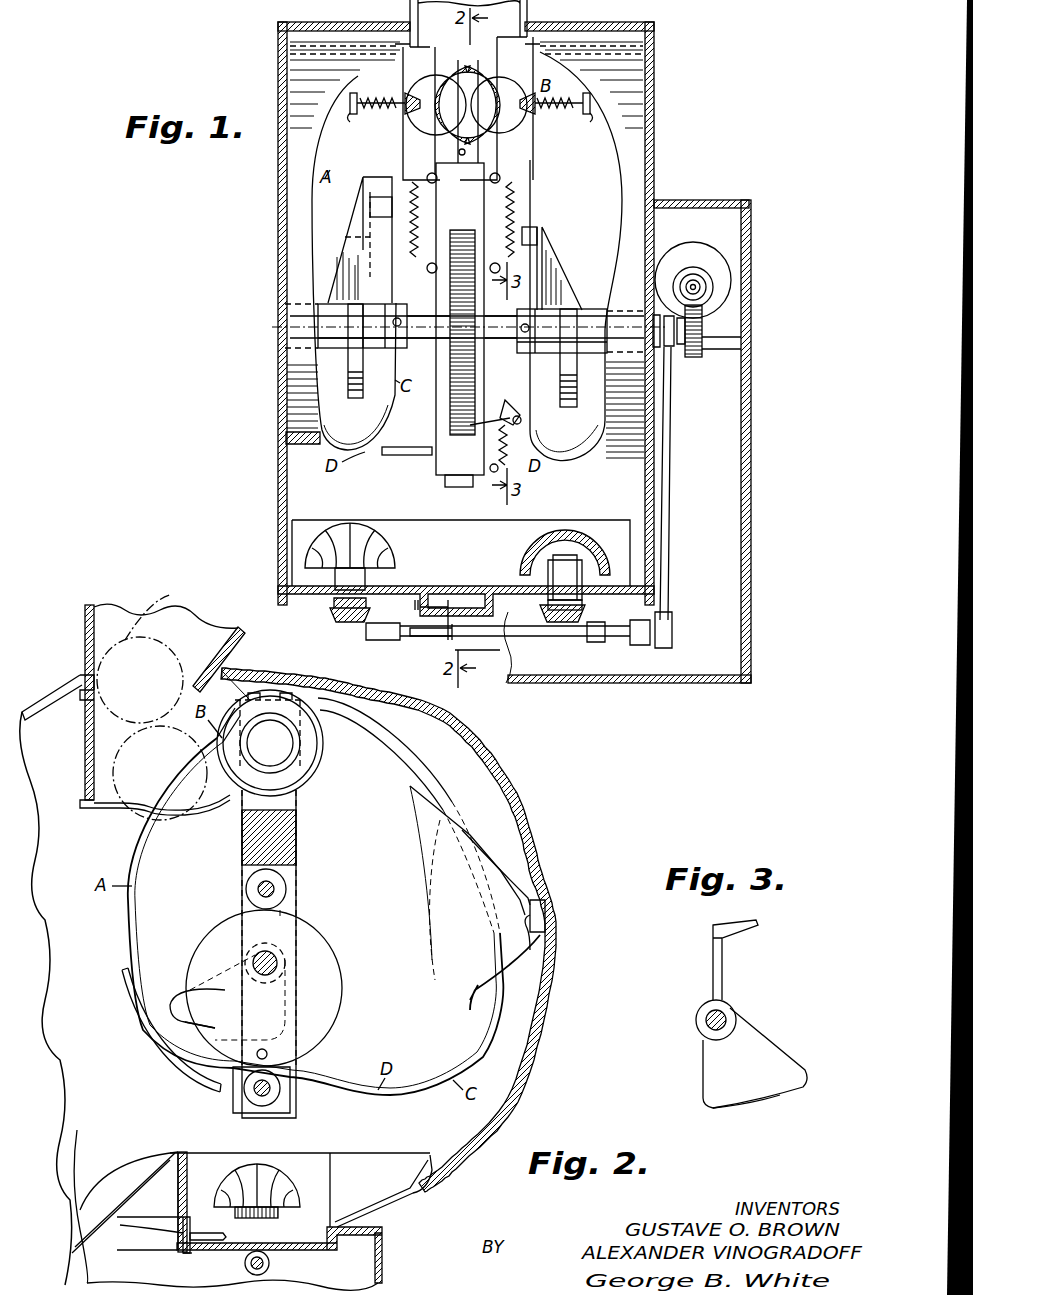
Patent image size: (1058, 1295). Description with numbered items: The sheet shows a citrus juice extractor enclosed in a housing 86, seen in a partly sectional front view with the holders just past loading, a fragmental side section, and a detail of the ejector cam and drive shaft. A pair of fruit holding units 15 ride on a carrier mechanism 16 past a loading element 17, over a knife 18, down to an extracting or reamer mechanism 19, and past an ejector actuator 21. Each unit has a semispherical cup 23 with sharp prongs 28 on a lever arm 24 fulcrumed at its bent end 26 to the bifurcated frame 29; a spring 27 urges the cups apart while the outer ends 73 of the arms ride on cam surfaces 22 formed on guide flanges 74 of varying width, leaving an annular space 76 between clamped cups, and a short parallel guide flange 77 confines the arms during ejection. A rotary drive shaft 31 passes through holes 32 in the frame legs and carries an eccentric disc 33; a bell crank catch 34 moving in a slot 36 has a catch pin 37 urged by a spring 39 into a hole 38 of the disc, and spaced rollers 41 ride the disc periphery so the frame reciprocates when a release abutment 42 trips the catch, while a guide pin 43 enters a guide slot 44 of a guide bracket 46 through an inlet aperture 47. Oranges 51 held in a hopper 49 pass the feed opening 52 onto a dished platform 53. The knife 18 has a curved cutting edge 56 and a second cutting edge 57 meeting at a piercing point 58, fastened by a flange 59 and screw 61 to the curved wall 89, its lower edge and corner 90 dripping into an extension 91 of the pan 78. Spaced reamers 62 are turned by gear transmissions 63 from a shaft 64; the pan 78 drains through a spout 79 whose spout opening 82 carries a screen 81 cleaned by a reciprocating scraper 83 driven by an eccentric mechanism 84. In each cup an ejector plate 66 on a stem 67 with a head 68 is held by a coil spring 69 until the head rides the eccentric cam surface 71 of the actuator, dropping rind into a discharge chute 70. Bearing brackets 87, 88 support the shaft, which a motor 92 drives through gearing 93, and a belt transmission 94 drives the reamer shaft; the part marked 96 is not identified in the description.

In FIG. 1, the fruit holding unit 15 is at (526, 49).
In FIG. 1, the carrier mechanism 16 is at (424, 412).
In FIG. 2, the loading element 17 is at (97, 815).
In FIG. 2, the knife 18 is at (435, 840).
In FIG. 1, the extracting or reamer mechanism 19 is at (392, 526).
In FIG. 2, the extracting or reamer mechanism 19 is at (290, 1158).
In FIG. 1, the ejector actuator 21 is at (350, 358).
In FIG. 2, the ejector actuator 21 is at (185, 990).
In FIG. 3, the ejector actuator 21 is at (770, 1045).
In FIG. 1, the cam or guide surface 22 is at (318, 145).
In FIG. 2, the cam or guide surface 22 is at (493, 1005).
In FIG. 1, the semispherical cup 23 is at (450, 75).
In FIG. 2, the semispherical cup 23 is at (320, 760).
In FIG. 1, the lever arm 24 is at (403, 162).
In FIG. 1, the bent end 26 is at (418, 186).
In FIG. 1, the spring 27 is at (520, 212).
In FIG. 1, the sharp prongs 28 is at (462, 150).
In FIG. 2, the sharp prongs 28 is at (325, 745).
In FIG. 2, the bifurcated frame 29 is at (292, 806).
In FIG. 1, the rotary drive shaft 31 is at (415, 316).
In FIG. 2, the rotary drive shaft 31 is at (278, 952).
In FIG. 3, the rotary drive shaft 31 is at (705, 1022).
In FIG. 1, the holes 32 is at (440, 345).
In FIG. 1, the eccentric disc 33 is at (458, 283).
In FIG. 2, the eccentric disc 33 is at (332, 960).
In FIG. 1, the bell crank catch 34 is at (517, 410).
In FIG. 1, the slot 36 is at (502, 346).
In FIG. 1, the catch pin 37 is at (486, 426).
In FIG. 2, the hole 38 is at (268, 1054).
In FIG. 1, the spring 39 is at (502, 456).
In FIG. 1, the spaced rollers 41 is at (462, 232).
In FIG. 2, the spaced rollers 41 is at (284, 882).
In FIG. 1, the release abutment 42 is at (537, 238).
In FIG. 3, the release abutment 42 is at (757, 933).
In FIG. 1, the guide pin 43 is at (382, 455).
In FIG. 1, the guide slot 44 is at (365, 242).
In FIG. 1, the guide bracket 46 is at (370, 216).
In FIG. 1, the inlet aperture 47 is at (380, 200).
In FIG. 2, the hopper 49 is at (240, 640).
In FIG. 2, the orange 51 is at (150, 625).
In FIG. 2, the feed opening 52 is at (235, 688).
In FIG. 2, the dished platform 53 is at (165, 820).
In FIG. 2, the curved cutting edge 56 is at (433, 884).
In FIG. 2, the cutting edge 57 is at (485, 840).
In FIG. 2, the piercing point 58 is at (410, 786).
In FIG. 2, the flange 59 is at (546, 908).
In FIG. 2, the screw 61 is at (532, 940).
In FIG. 1, the reamers 62 is at (338, 527).
In FIG. 2, the reamers 62 is at (295, 1188).
In FIG. 1, the gear transmissions 63 is at (352, 626).
In FIG. 2, the gear transmissions 63 is at (245, 1266).
In FIG. 1, the shaft 64 is at (422, 638).
In FIG. 2, the shaft 64 is at (270, 1262).
In FIG. 1, the ejector plate 66 is at (433, 110).
In FIG. 2, the ejector plate 66 is at (285, 733).
In FIG. 1, the stem 67 is at (395, 98).
In FIG. 1, the head 68 is at (360, 110).
In FIG. 1, the coil spring 69 is at (555, 117).
In FIG. 2, the discharge chute 70 is at (120, 1210).
In FIG. 1, the eccentric cam surface 71 is at (353, 398).
In FIG. 2, the eccentric cam surface 71 is at (192, 1014).
In FIG. 3, the eccentric cam surface 71 is at (735, 1105).
In FIG. 1, the outer ends 73 is at (403, 45).
In FIG. 1, the guide flanges 74 is at (300, 157).
In FIG. 1, the annular space 76 is at (472, 70).
In FIG. 2, the parallel guide flange 77 is at (132, 1000).
In FIG. 1, the pan 78 is at (618, 546).
In FIG. 2, the pan 78 is at (215, 1157).
In FIG. 2, the spout 79 is at (122, 1252).
In FIG. 2, the screen 81 is at (186, 1255).
In FIG. 2, the spout opening 82 is at (180, 1236).
In FIG. 2, the reciprocating scraper 83 is at (226, 1238).
In FIG. 1, the eccentric mechanism 84 is at (560, 620).
In FIG. 1, the housing 86 is at (283, 200).
In FIG. 1, the bearing bracket 87 is at (556, 353).
In FIG. 3, the bearing bracket 87 is at (702, 1038).
In FIG. 1, the bearing bracket 88 is at (380, 348).
In FIG. 2, the curved wall 89 is at (545, 822).
In FIG. 2, the lower edge and corner 90 is at (455, 998).
In FIG. 2, the extension 91 is at (422, 1160).
In FIG. 1, the motor 92 is at (697, 256).
In FIG. 1, the gearing 93 is at (693, 352).
In FIG. 1, the belt transmission 94 is at (666, 478).
In FIG. 1, the motor housing 96 is at (751, 620).